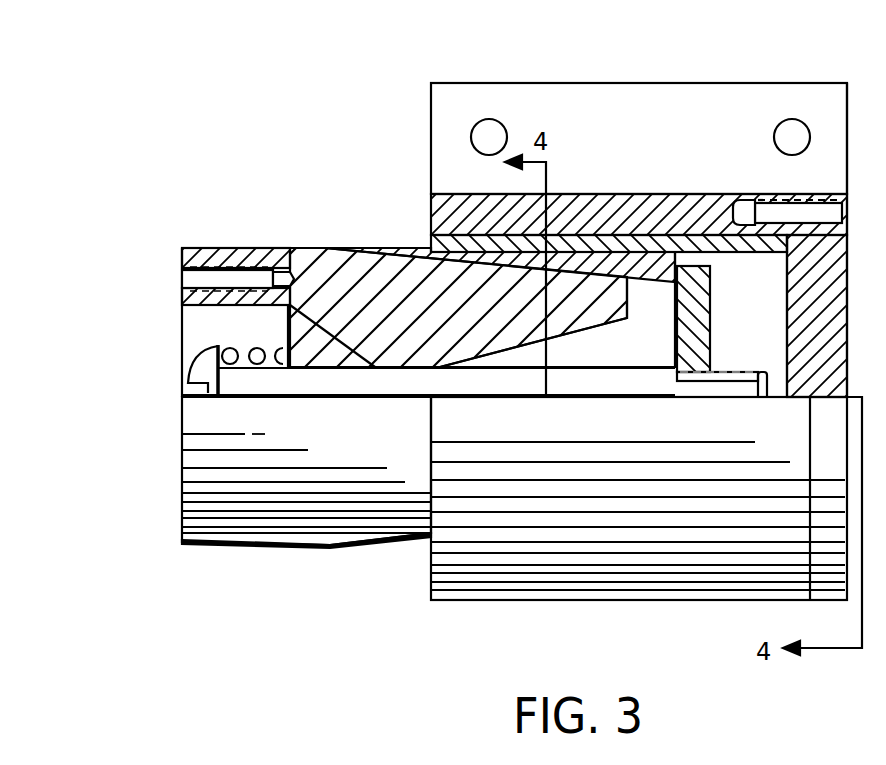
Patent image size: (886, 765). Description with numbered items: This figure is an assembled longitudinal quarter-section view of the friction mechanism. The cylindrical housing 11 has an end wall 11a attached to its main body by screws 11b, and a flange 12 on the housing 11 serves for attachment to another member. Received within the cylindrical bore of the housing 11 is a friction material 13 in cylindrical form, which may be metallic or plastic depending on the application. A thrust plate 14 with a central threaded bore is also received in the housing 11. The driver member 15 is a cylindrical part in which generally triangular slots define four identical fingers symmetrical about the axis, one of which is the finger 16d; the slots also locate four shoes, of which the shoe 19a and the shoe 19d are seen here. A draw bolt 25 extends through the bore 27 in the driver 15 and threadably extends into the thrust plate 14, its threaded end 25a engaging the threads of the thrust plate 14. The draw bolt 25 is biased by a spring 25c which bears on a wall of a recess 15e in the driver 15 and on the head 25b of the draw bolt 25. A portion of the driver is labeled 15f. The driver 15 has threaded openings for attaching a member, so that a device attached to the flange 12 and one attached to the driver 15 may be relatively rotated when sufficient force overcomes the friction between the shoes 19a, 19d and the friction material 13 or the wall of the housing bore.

The cylindrical housing 11 is at (477, 587).
The end wall 11a is at (827, 547).
The screws 11b is at (838, 213).
The flange 12 is at (783, 83).
The friction material 13 is at (677, 252).
The thrust plate 14 is at (680, 332).
The driver member 15 is at (192, 462).
The recess 15e is at (222, 345).
The rod flange 15f is at (183, 275).
The finger 16d is at (455, 273).
The shoe 19a is at (584, 268).
The shoe 19d is at (593, 350).
The draw bolt 25 is at (242, 388).
The threaded end 25a is at (718, 381).
The head 25b is at (197, 360).
The spring 25c is at (192, 320).
The bore 27 is at (232, 250).